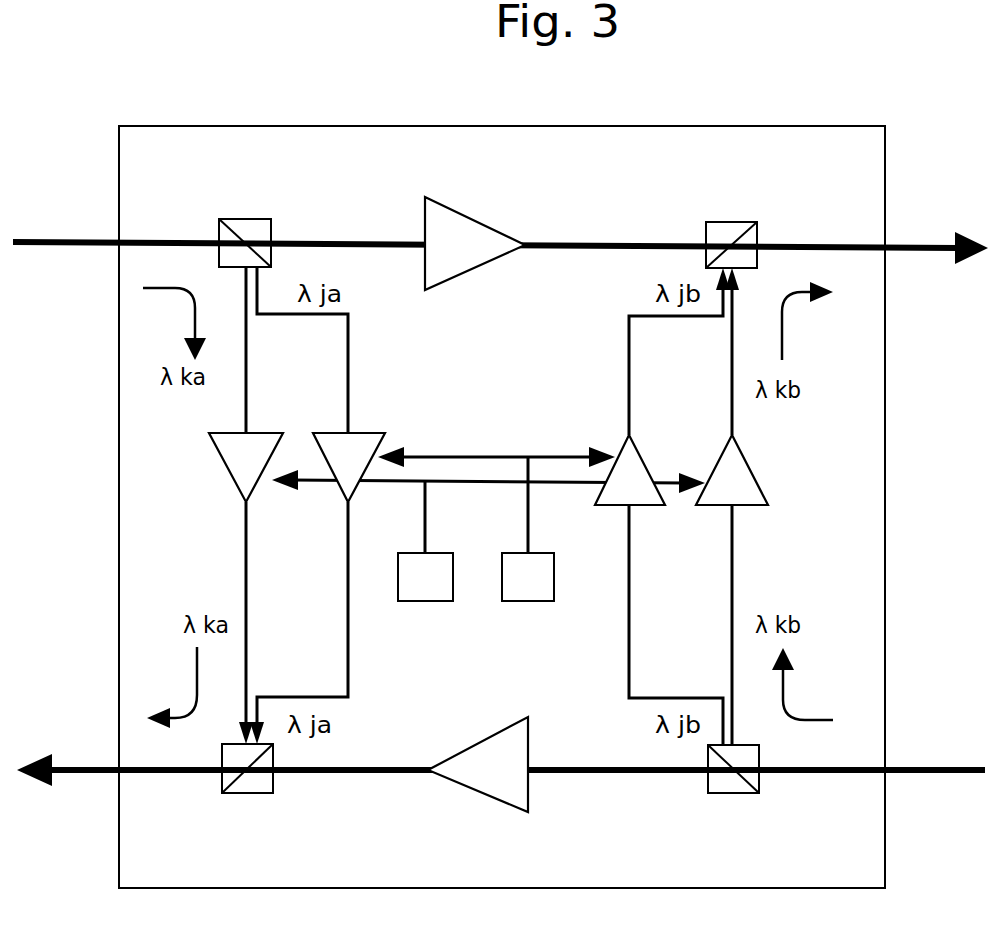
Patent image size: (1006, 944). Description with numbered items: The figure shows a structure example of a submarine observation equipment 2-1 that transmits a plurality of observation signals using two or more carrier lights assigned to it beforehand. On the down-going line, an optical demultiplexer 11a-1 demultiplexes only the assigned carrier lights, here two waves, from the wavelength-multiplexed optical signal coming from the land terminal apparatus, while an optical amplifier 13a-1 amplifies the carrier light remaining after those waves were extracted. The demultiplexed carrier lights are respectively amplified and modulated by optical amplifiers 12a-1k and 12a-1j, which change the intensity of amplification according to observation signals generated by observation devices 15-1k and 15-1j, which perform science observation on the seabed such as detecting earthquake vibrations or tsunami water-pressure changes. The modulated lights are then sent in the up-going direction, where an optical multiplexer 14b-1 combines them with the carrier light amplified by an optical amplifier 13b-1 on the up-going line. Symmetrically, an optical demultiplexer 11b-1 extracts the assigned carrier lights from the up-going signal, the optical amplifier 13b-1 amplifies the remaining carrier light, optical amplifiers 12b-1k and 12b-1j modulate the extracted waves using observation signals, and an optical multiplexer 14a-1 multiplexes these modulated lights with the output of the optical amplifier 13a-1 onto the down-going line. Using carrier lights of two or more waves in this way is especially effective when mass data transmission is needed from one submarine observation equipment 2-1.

The submarine observation equipment 2-1 is at (270, 125).
The optical demultiplexer 11a-1 is at (234, 219).
The optical amplifier 13a-1 is at (487, 227).
The optical multiplexer 14a-1 is at (738, 222).
The optical demultiplexer 11b-1 is at (732, 793).
The optical amplifier 13b-1 is at (475, 782).
The optical multiplexer 14b-1 is at (234, 793).
The optical amplifier 12a-1k is at (258, 433).
The optical amplifier 12a-1j is at (360, 433).
The optical amplifier 12b-1j is at (620, 435).
The optical amplifier 12b-1k is at (720, 435).
The observation device 15-1k is at (432, 601).
The observation device 15-1j is at (532, 601).